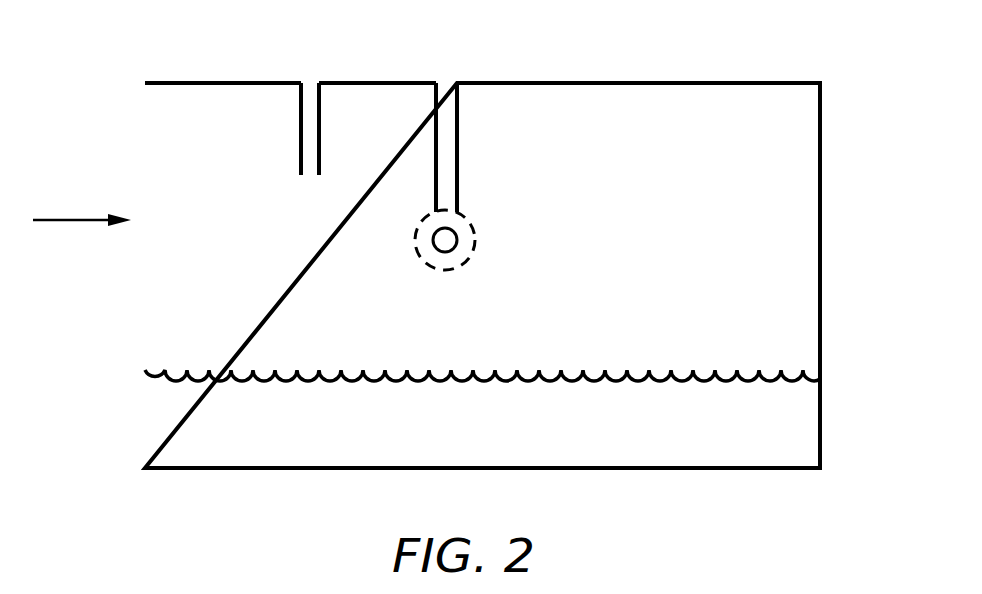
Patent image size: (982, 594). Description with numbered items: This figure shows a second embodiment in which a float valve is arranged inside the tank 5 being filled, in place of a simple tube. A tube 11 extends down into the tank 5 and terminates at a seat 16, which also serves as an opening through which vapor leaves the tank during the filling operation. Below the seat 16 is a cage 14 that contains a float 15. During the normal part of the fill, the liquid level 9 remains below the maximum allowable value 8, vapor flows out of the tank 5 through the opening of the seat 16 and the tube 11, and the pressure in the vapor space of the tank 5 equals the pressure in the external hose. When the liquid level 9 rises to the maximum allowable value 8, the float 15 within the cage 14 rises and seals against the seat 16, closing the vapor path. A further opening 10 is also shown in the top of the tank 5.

The tank 5 is at (828, 193).
The maximum allowable value 8 is at (82, 219).
The liquid level 9 is at (805, 380).
The first slot / opening 10 is at (310, 100).
The tube 11 is at (445, 97).
The cage 14 is at (463, 262).
The float 15 is at (437, 246).
The seat 16 is at (463, 208).